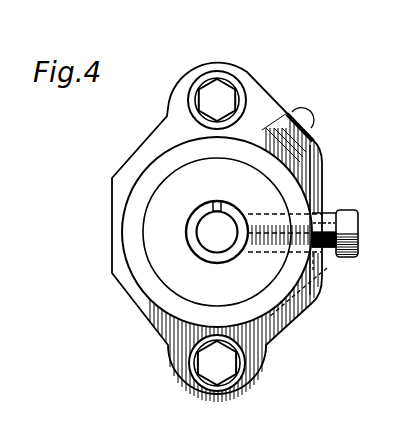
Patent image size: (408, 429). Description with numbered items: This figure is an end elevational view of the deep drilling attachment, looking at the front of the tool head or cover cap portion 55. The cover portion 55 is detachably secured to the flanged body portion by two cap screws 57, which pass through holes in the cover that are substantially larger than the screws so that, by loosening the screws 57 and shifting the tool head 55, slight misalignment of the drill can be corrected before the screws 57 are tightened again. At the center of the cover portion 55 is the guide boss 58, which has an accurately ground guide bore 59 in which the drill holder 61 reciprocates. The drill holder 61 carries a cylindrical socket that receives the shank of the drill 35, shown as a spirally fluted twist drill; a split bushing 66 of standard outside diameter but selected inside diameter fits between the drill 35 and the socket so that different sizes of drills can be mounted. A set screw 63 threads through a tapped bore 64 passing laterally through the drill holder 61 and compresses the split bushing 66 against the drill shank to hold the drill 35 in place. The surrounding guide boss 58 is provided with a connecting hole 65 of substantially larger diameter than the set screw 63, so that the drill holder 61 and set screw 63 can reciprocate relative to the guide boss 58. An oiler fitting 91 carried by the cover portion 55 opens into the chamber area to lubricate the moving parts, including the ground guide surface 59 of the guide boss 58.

The drill 35 is at (212, 231).
The tool head or cover cap portion 55 is at (257, 105).
The cap screws 57 is at (212, 92).
The guide boss 58 is at (135, 191).
The guide bore 59 is at (143, 213).
The drill holder 61 is at (197, 288).
The set screw 63 is at (348, 212).
The tapped bore 64 is at (303, 311).
The connecting hole 65 is at (327, 268).
The split bushing 66 is at (207, 255).
The oiler fitting 91 is at (302, 122).